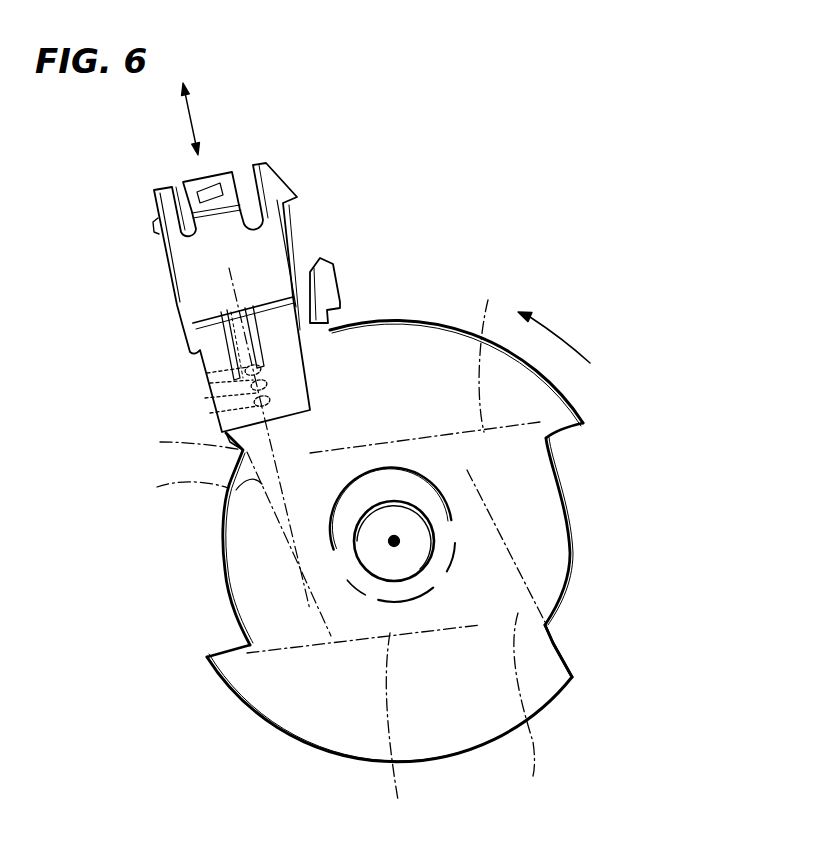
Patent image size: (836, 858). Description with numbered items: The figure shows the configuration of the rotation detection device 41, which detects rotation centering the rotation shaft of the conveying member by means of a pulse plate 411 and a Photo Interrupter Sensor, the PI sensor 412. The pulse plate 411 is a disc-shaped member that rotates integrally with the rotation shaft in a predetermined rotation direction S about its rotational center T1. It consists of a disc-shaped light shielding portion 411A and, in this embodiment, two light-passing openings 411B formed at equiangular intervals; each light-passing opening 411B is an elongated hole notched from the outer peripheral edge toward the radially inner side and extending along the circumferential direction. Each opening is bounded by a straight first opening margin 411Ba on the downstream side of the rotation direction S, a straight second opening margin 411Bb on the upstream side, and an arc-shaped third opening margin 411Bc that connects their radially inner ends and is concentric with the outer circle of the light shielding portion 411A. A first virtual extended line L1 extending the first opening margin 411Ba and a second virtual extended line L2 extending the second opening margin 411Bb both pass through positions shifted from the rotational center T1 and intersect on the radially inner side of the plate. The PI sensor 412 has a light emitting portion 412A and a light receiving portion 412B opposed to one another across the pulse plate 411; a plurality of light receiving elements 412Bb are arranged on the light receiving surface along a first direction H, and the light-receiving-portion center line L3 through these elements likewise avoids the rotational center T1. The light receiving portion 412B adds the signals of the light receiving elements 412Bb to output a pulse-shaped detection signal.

The rotation detection device 41 is at (445, 270).
The pulse plate 411 is at (95, 636).
The light shielding portion 411A is at (242, 679).
The light-passing opening 411B is at (222, 543).
The first opening margin 411Ba is at (573, 430).
The second opening margin 411Bb is at (558, 647).
The third opening margin 411Bc is at (569, 521).
The Photo Interrupter Sensor (PI sensor) 412 is at (464, 190).
The light emitting portion 412A is at (323, 290).
The light receiving portion 412B is at (270, 322).
The light receiving elements 412Bb is at (210, 413).
The rotational center T1 is at (396, 543).
The first virtual extended line L1 is at (442, 551).
The second virtual extended line L2 is at (335, 637).
The light-receiving-portion center line L3 is at (333, 537).
The first direction H is at (193, 117).
The rotation direction S is at (570, 327).